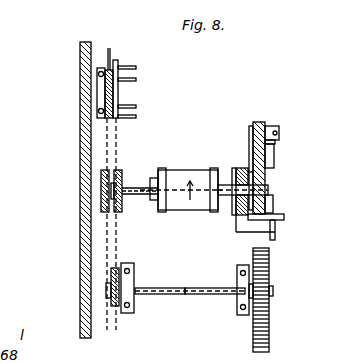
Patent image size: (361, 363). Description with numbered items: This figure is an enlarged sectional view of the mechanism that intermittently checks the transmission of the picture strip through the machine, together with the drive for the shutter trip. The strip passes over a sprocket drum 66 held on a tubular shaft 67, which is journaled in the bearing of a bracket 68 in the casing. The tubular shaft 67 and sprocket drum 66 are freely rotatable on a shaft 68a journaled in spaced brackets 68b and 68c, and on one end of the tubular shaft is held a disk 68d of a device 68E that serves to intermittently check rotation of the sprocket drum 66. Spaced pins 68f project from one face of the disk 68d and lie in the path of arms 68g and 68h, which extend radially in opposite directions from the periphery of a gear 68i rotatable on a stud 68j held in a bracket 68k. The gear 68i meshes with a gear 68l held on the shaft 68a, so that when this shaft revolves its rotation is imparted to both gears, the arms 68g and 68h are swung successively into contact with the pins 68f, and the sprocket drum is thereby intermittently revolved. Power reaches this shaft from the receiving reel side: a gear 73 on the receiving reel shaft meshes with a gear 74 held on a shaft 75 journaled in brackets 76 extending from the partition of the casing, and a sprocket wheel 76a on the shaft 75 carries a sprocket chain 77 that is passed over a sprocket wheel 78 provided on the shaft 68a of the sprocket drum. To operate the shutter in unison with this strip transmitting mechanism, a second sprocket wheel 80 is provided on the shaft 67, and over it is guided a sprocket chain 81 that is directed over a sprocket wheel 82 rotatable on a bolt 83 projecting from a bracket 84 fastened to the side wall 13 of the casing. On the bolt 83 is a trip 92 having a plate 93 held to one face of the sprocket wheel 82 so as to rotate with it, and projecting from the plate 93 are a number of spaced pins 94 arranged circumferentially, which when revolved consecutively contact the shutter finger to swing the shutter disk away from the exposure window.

The side wall 13 is at (80, 200).
The sprocket drum 66 is at (178, 174).
The tubular shaft 67 is at (224, 197).
The bracket 68 is at (233, 233).
The shaft 68a is at (127, 170).
The bracket 68b is at (168, 232).
The bracket 68c is at (276, 224).
The disk 68d is at (236, 180).
The device 68E is at (267, 122).
The pins 68f is at (241, 167).
The arm 68g is at (258, 172).
The arm 68h is at (252, 120).
The gear 68i is at (268, 128).
The stud 68j is at (270, 141).
The bracket 68k is at (274, 158).
The gear 68l is at (268, 202).
The gear 73 is at (271, 341).
The gear 74 is at (271, 293).
The shaft 75 is at (168, 296).
The brackets 76 is at (240, 307).
The sprocket wheel 76a is at (110, 298).
The sprocket chain 77 is at (115, 240).
The sprocket wheel 78 is at (121, 210).
The second sprocket wheel 80 is at (101, 180).
The sprocket chain 81 is at (105, 138).
The sprocket wheel 82 is at (108, 72).
The bolt 83 is at (80, 93).
The bracket 84 is at (97, 73).
The trip 92 is at (118, 62).
The plate 93 is at (118, 93).
The pins 94 is at (137, 80).